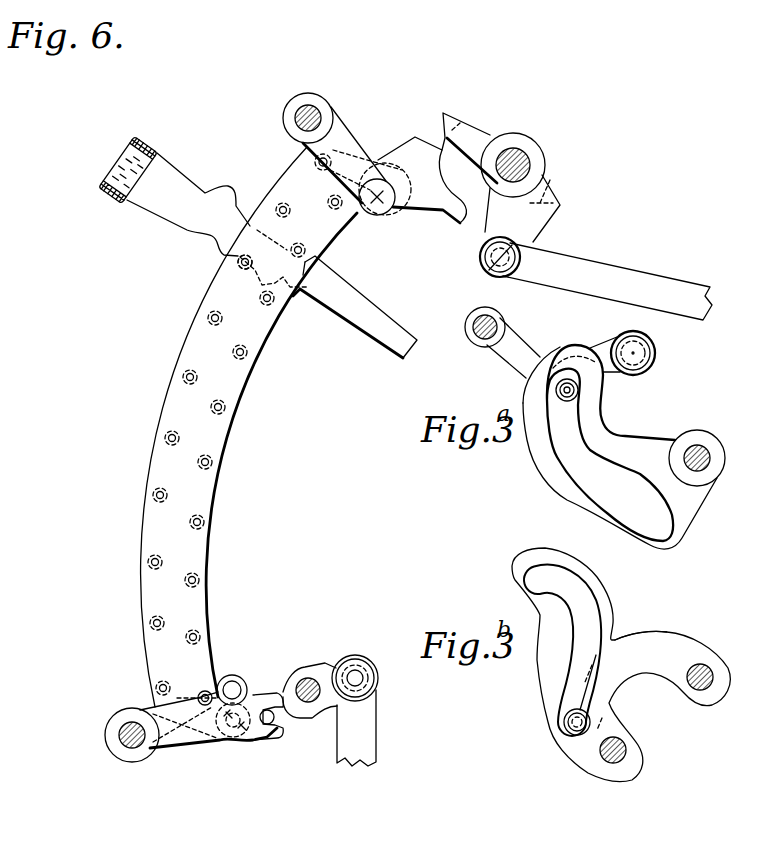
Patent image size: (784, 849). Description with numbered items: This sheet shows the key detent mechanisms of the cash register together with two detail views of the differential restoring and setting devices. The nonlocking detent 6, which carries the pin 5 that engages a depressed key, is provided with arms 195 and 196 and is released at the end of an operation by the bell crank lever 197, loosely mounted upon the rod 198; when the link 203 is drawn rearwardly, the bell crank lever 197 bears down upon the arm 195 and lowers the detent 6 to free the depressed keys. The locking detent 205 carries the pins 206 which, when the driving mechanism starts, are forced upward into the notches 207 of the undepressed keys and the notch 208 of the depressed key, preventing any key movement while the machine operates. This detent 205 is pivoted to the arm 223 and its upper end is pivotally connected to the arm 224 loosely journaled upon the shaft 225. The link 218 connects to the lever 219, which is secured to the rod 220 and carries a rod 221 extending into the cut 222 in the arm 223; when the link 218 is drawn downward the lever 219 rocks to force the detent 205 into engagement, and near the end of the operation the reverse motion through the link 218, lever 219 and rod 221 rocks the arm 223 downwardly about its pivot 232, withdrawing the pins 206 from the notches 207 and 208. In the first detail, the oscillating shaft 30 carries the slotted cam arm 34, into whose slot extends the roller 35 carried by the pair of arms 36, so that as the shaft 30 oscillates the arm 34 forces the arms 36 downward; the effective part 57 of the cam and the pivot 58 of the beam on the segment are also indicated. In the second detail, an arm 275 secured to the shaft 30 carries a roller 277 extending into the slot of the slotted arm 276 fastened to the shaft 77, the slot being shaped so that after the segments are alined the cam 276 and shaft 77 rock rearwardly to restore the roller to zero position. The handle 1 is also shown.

In FIG. 6, the handle 1 is at (113, 158).
In FIG. 6, the pin 5 is at (207, 318).
In FIG. 6, the detent 6 is at (312, 158).
In FIG. 6, the arm 195 is at (358, 133).
In FIG. 6, the arm 196 is at (192, 752).
In FIG. 6, the bell crank lever 197 is at (475, 138).
In FIG. 6, the rod 198 is at (525, 168).
In FIG. 6, the link 203 is at (627, 288).
In FIG. 6, the locking detent 205 is at (238, 380).
In FIG. 6, the pins 206 is at (200, 522).
In FIG. 6, the notches 207 is at (300, 290).
In FIG. 6, the notch 208 is at (236, 262).
In FIG. 6, the link 218 is at (377, 738).
In FIG. 6, the lever 219 is at (325, 665).
In FIG. 6, the rod 220 is at (333, 707).
In FIG. 6, the rod 221 is at (270, 690).
In FIG. 6, the cut 222 is at (275, 740).
In FIG. 6, the arm 223 is at (162, 752).
In FIG. 6, the arm 224 is at (388, 216).
In FIG. 6, the shaft 225 is at (308, 105).
In FIG. 6, the pivot 232 is at (113, 726).
In FIG. 3A, the shaft 30 is at (707, 464).
In FIG. 3B, the shaft 30 is at (704, 690).
In FIG. 3A, the slotted cam arm 34 is at (539, 472).
In FIG. 3A, the roller 35 is at (556, 392).
In FIG. 3A, the arms 36 is at (503, 368).
In FIG. 3A, the effective part of the cam 57 is at (656, 367).
In FIG. 3A, the pivot 58 is at (473, 323).
In FIG. 3B, the shaft 77 is at (612, 758).
In FIG. 3B, the arm 275 is at (677, 637).
In FIG. 3B, the slotted arm 276 is at (545, 690).
In FIG. 3B, the roller 277 is at (577, 738).